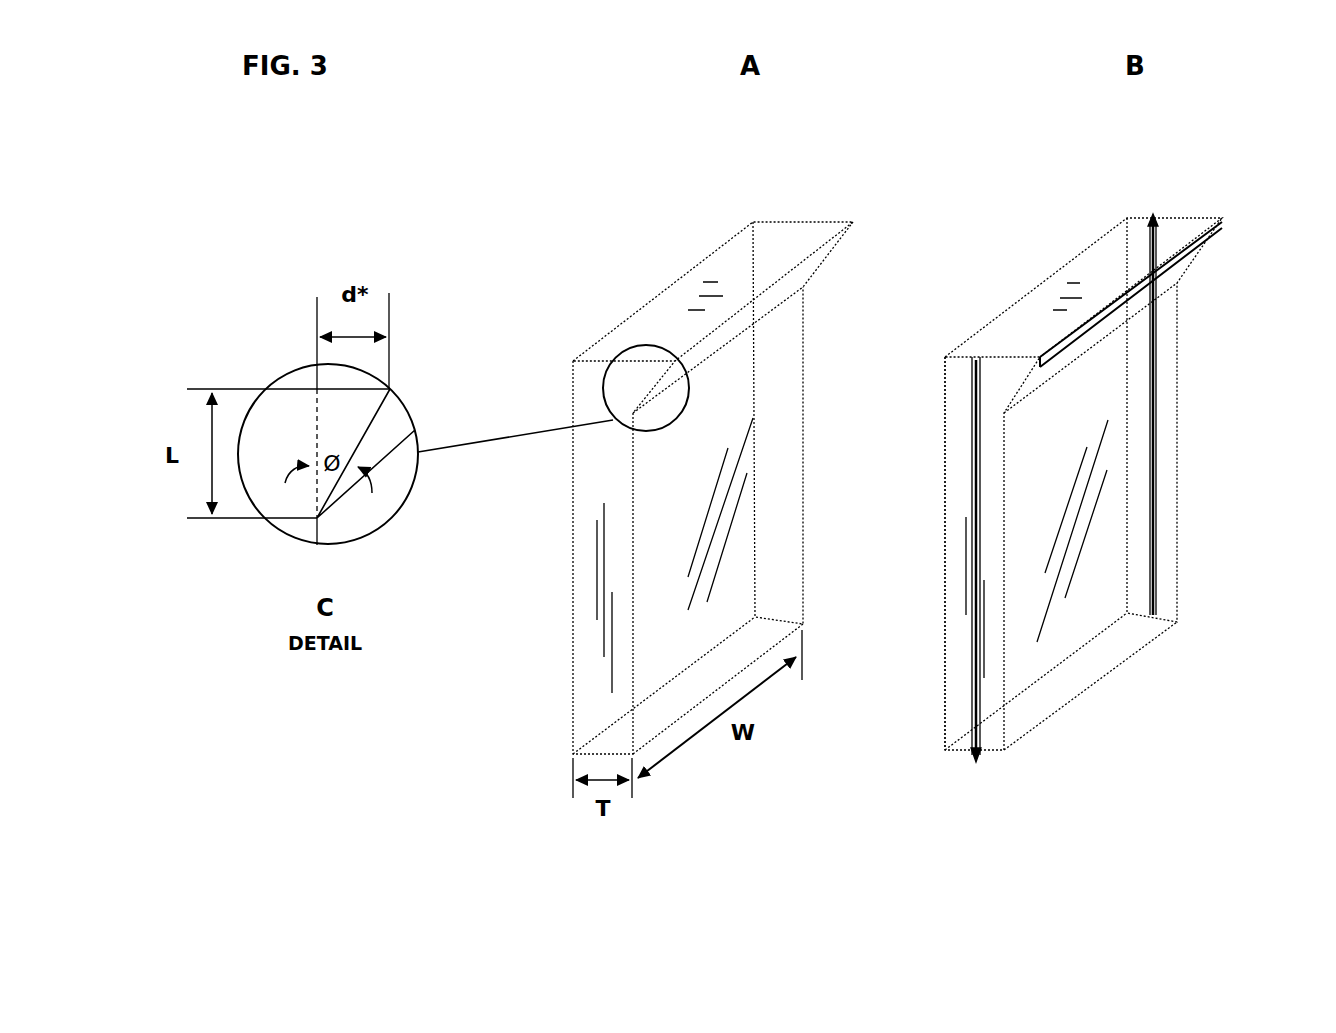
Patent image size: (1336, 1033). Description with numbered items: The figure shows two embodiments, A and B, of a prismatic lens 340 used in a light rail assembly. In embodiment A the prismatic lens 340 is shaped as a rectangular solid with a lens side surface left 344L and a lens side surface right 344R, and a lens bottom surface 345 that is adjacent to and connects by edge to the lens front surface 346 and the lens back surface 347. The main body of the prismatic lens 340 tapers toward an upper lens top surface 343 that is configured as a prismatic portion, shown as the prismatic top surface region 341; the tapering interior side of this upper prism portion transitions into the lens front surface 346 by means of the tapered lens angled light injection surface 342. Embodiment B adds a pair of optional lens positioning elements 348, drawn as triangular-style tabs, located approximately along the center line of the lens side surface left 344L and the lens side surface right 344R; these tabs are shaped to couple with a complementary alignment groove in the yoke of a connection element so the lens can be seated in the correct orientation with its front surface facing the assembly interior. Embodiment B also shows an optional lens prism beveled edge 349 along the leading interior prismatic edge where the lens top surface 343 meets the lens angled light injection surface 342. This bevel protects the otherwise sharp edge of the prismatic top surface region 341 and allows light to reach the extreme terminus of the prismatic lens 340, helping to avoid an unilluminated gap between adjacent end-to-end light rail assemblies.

The prismatic lens 340 is at (622, 232).
The prismatic top surface region 341 is at (638, 377).
The lens angled light injection surface 342 is at (773, 293).
The lens top surface 343 is at (709, 290).
The lens side surface left 344L is at (603, 589).
The lens side surface right 344R is at (1140, 243).
The lens bottom surface 345 is at (1037, 703).
The lens front surface 346 is at (728, 494).
The lens back surface 347 is at (944, 583).
The lens positioning element 348 is at (1155, 365).
The lens prism beveled edge 349 is at (1222, 222).